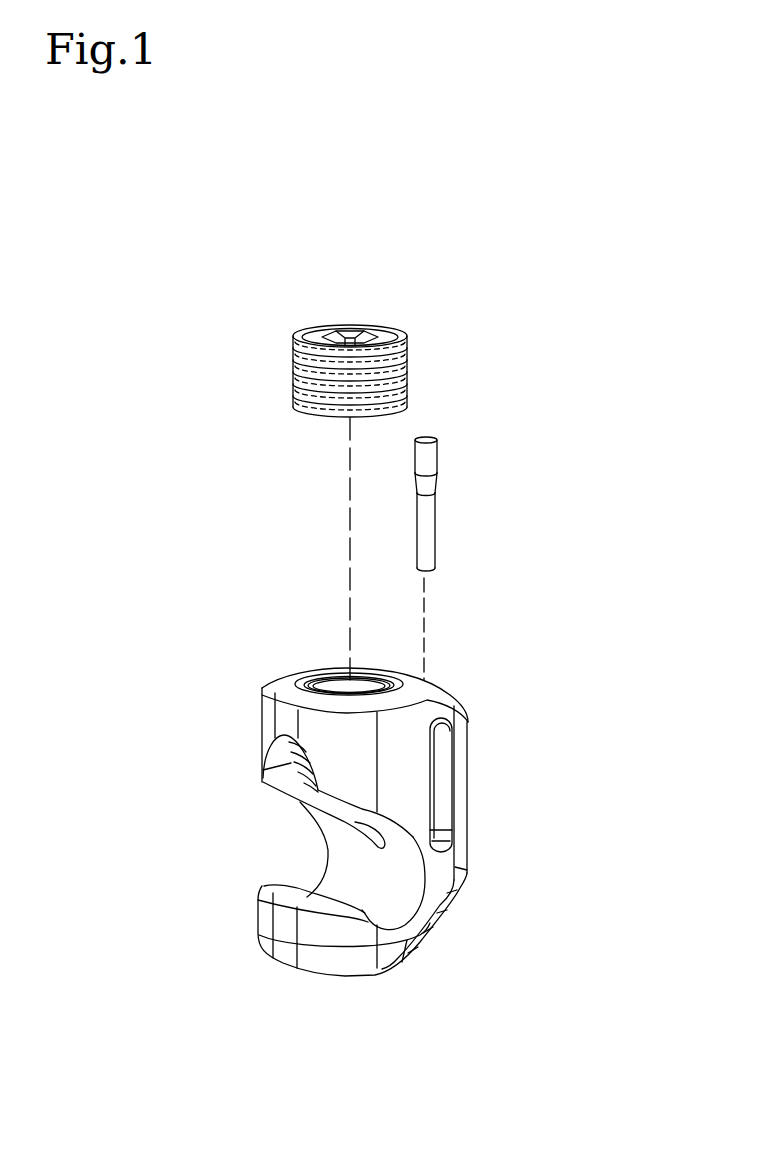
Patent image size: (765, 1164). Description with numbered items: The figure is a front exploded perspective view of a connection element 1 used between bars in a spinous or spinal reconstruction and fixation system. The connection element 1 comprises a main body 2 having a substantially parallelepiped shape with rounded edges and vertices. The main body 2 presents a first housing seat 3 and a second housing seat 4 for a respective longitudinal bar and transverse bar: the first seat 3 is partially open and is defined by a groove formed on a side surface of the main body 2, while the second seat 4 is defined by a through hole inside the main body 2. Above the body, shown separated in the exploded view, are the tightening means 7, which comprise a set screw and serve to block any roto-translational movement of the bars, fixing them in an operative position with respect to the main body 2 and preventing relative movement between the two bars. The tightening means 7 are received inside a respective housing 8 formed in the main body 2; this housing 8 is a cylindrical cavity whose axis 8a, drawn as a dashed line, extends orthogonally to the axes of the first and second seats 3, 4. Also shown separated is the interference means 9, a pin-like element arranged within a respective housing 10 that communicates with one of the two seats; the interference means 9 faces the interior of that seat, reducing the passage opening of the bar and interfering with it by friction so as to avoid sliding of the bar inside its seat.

The connection element 1 is at (476, 268).
The main body 2 is at (467, 880).
The first housing seat 3 is at (385, 900).
The second housing seat 4 is at (350, 817).
The tightening means 7 is at (320, 326).
The housing 8 is at (322, 682).
The axis of the housing 8a is at (348, 492).
The interference means 9 is at (428, 450).
The housing for interference means 10 is at (440, 750).